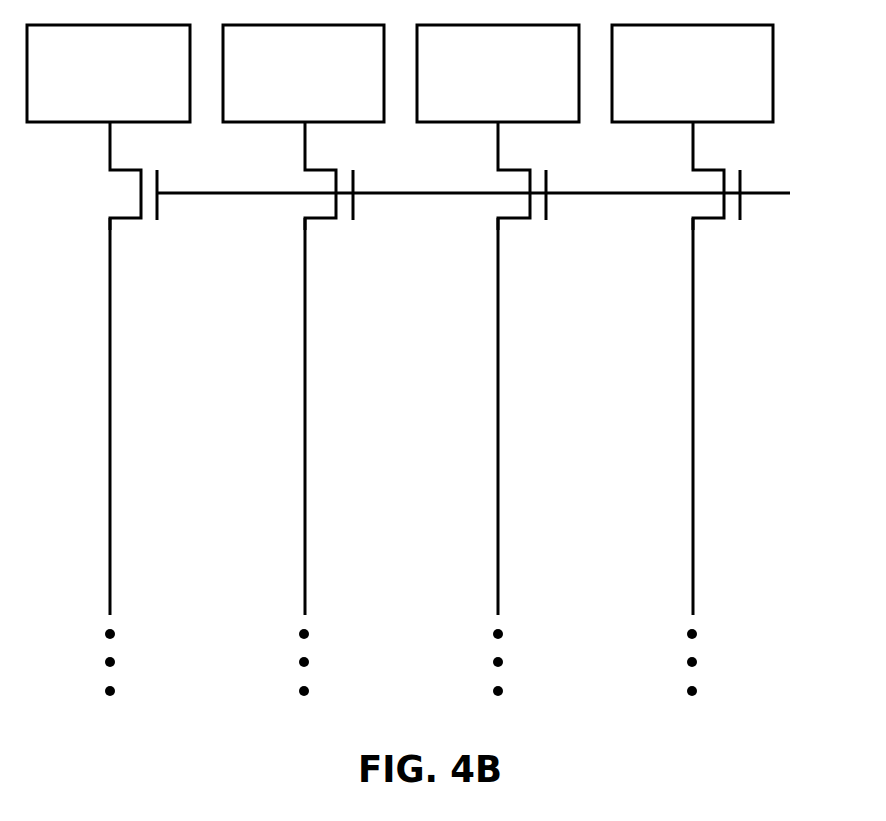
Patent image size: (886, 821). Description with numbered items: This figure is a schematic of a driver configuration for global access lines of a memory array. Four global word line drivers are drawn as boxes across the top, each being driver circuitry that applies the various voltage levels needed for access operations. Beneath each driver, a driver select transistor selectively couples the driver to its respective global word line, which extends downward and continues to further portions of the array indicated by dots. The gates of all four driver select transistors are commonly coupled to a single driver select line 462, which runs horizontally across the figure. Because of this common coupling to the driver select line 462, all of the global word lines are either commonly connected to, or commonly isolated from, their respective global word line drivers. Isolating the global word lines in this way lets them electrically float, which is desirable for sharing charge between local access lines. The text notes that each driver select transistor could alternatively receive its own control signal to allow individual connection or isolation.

The driver select line 462 is at (773, 197).